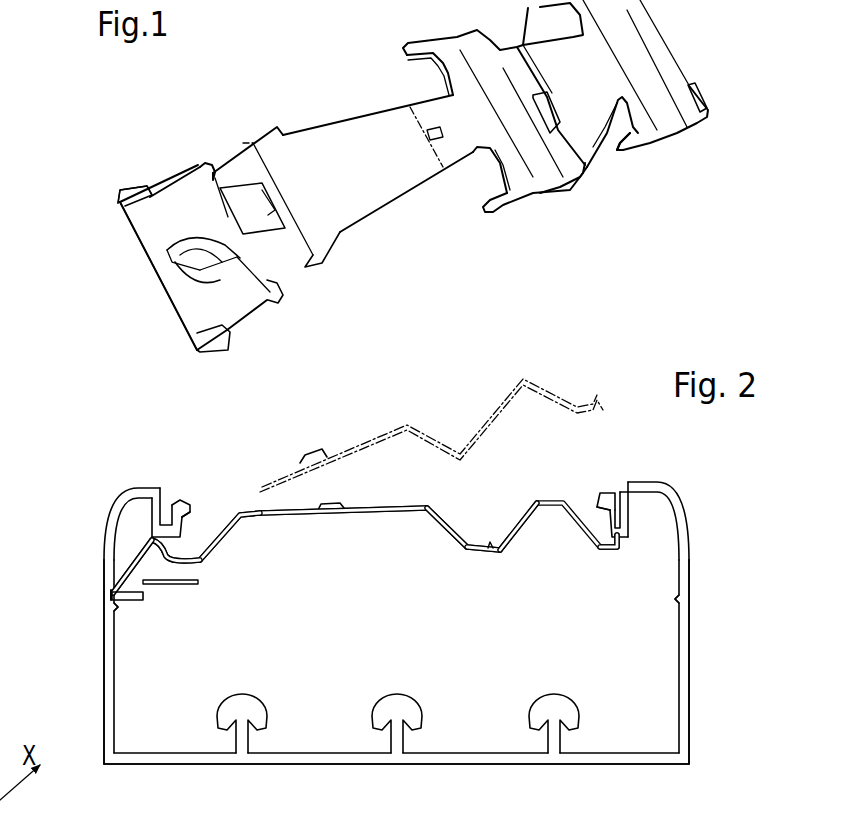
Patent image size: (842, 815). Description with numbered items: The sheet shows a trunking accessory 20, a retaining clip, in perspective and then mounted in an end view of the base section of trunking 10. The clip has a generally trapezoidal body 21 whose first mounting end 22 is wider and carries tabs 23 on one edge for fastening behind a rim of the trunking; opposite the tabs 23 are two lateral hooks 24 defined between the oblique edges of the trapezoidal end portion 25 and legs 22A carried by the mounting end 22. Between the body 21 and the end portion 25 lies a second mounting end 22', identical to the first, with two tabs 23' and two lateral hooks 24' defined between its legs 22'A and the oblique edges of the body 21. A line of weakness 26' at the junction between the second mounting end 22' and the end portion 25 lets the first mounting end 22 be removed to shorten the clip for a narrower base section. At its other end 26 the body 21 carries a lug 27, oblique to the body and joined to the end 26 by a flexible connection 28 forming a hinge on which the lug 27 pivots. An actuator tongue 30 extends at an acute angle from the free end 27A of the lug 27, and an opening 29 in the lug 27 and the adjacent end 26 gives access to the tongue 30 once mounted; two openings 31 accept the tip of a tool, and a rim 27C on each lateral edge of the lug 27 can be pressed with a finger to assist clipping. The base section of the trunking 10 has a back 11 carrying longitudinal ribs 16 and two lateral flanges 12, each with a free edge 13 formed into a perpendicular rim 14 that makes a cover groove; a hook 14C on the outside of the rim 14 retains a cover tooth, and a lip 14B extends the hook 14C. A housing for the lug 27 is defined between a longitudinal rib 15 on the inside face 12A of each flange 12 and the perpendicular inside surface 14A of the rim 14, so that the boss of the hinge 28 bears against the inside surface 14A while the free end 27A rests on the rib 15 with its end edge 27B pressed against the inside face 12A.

In FIG. 2, the trunking 10 is at (693, 697).
In FIG. 2, the back 11 is at (503, 757).
In FIG. 2, the lateral flange 12 is at (100, 702).
In FIG. 2, the inside face 12A is at (113, 690).
In FIG. 2, the free edge 13 is at (133, 488).
In FIG. 2, the perpendicular rim 14 is at (163, 527).
In FIG. 2, the perpendicular inside surface 14A is at (160, 537).
In FIG. 2, the lip 14B is at (190, 533).
In FIG. 2, the hook 14C is at (190, 503).
In FIG. 2, the longitudinal rib 15 is at (115, 608).
In FIG. 2, the longitudinal ribs 16 is at (233, 737).
In FIG. 1, the trunking accessory 20 is at (340, 106).
In FIG. 2, the trunking accessory 20 is at (380, 430).
In FIG. 1, the body 21 is at (375, 193).
In FIG. 2, the body 21 is at (317, 513).
In FIG. 1, the first mounting end 22 is at (664, 89).
In FIG. 2, the first mounting end 22 is at (545, 543).
In FIG. 2, the second mounting end 22' is at (430, 543).
In FIG. 1, the legs 22A is at (630, 142).
In FIG. 1, the legs 22'A is at (480, 134).
In FIG. 1, the tabs 23 is at (703, 56).
In FIG. 2, the tabs 23 is at (633, 553).
In FIG. 1, the tabs 23' is at (538, 124).
In FIG. 2, the tabs 23' is at (487, 580).
In FIG. 1, the lateral hooks 24 is at (605, 108).
In FIG. 1, the lateral hooks 24' is at (439, 129).
In FIG. 1, the end portion 25 is at (588, 120).
In FIG. 1, the end 26 is at (245, 173).
In FIG. 2, the end 26 is at (237, 536).
In FIG. 1, the line of weakness 26' is at (560, 97).
In FIG. 1, the lug 27 is at (176, 172).
In FIG. 2, the lug 27 is at (132, 560).
In FIG. 1, the free end 27A is at (118, 207).
In FIG. 2, the free end 27A is at (107, 600).
In FIG. 1, the end edge 27B is at (177, 323).
In FIG. 1, the rim 27C is at (137, 200).
In FIG. 2, the rim 27C is at (142, 598).
In FIG. 1, the flexible connection 28 is at (203, 163).
In FIG. 2, the flexible connection 28 is at (158, 532).
In FIG. 1, the opening 29 is at (287, 198).
In FIG. 1, the actuator tongue 30 is at (170, 252).
In FIG. 2, the actuator tongue 30 is at (192, 587).
In FIG. 1, the openings 31 is at (197, 237).